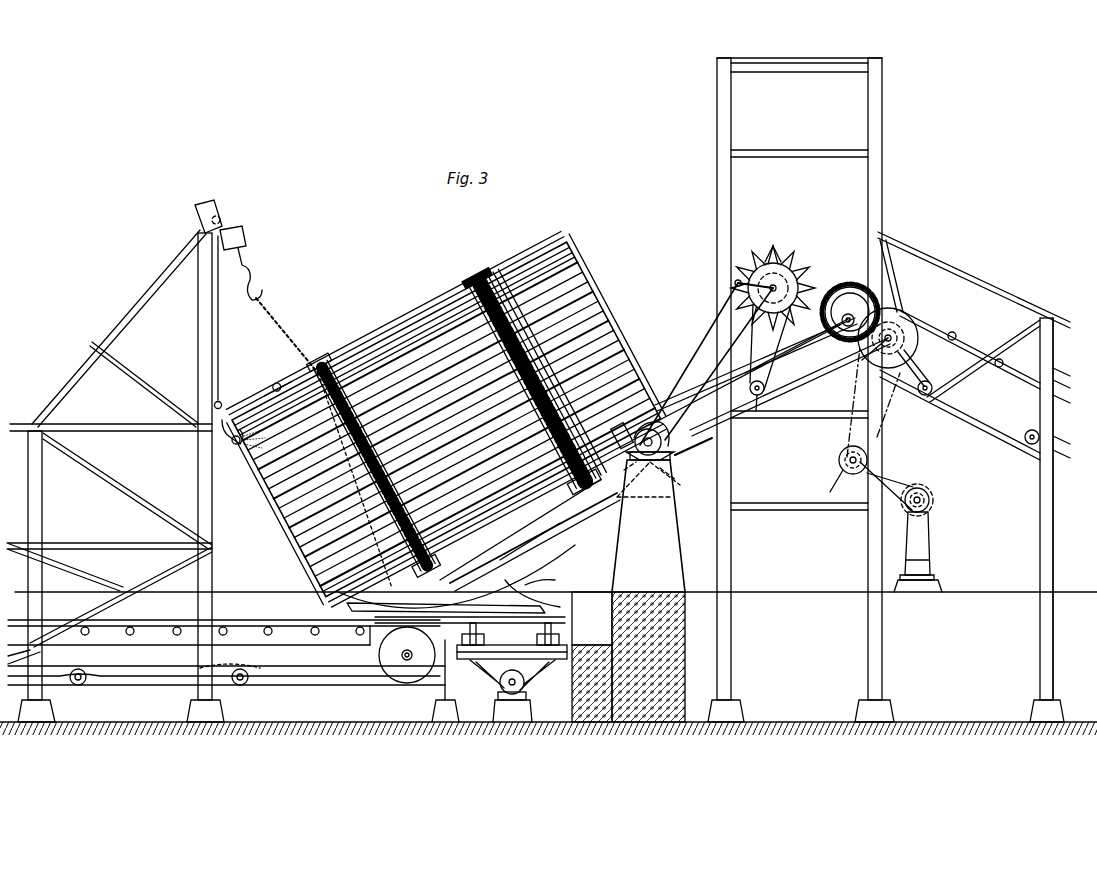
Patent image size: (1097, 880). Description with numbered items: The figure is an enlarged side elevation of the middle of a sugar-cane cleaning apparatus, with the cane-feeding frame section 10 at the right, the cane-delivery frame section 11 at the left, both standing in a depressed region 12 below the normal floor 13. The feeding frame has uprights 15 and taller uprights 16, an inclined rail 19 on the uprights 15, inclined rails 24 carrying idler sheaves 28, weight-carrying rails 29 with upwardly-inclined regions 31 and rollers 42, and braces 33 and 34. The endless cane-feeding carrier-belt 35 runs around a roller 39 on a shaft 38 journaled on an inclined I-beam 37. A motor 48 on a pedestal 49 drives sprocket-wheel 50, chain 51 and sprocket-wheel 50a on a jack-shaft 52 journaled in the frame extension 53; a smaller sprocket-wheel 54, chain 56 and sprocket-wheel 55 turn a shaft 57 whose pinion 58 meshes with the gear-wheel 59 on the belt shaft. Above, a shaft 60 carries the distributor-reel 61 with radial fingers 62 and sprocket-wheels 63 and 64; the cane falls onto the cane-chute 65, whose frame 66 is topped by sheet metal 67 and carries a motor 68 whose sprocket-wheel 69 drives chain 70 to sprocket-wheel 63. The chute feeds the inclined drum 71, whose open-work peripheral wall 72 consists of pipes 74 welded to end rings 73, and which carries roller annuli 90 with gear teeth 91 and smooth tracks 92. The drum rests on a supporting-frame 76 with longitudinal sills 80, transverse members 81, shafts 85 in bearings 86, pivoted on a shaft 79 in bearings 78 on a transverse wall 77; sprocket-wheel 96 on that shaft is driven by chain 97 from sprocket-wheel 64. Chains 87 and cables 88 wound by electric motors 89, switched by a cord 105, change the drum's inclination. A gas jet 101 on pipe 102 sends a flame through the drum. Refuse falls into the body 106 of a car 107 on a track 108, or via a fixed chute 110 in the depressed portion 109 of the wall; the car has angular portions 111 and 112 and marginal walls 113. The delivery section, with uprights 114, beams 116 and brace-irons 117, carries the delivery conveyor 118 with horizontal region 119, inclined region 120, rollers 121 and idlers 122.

The cane-feeding section of the frame-work 10 is at (1035, 481).
The cane-delivery frame section 11 is at (220, 513).
The depressed region 12 is at (145, 720).
The normal level or floor 13 is at (780, 592).
The uprights 15 is at (1040, 620).
The uprights 16 is at (731, 520).
The inclined rail 19 is at (965, 279).
The rails 24 is at (985, 431).
The idler rollers or sheaves 28 is at (930, 389).
The weight-carrying rails 29 is at (1004, 375).
The upwardly-inclined regions 31 is at (1052, 384).
The braces 33 is at (1016, 338).
The braces 34 is at (893, 273).
The endless cane-feeding carrier-belt 35 is at (1022, 369).
The I-beam 37 is at (795, 360).
The shaft 38 is at (848, 314).
The roller 39 is at (850, 291).
The rollers 42 is at (955, 334).
The engine or motor 48 is at (932, 502).
The pedestal 49 is at (926, 540).
The pulley or sprocket-wheel 50 is at (928, 497).
The pulley or sprocket-wheel 50a is at (842, 461).
The belt or sprocket-chain 51 is at (905, 480).
The jack-shaft 52 is at (840, 512).
The extension of the frame 53 is at (830, 513).
The pulley or sprocket-wheel 54 is at (843, 451).
The pulley or sprocket-wheel 55 is at (905, 333).
The belt or sprocket-chain 56 is at (885, 417).
The shaft 57 is at (880, 345).
The pinion 58 is at (905, 322).
The gear-wheel 59 is at (843, 283).
The shaft 60 is at (796, 262).
The distributor-reel 61 is at (735, 335).
The radially extending fingers or arms 62 is at (772, 248).
The pulley or sprocket-wheel 63 is at (742, 262).
The pulley or sprocket-wheel 64 is at (752, 289).
The cane-chute 65 is at (691, 378).
The frame 66 is at (800, 372).
The sheet metal 67 is at (748, 362).
The motor 68 is at (755, 398).
The pulley or sprocket-wheel 69 is at (765, 392).
The belt or sprocket-chain 70 is at (770, 360).
The drum 71 is at (426, 325).
The open-work peripheral wall 72 is at (521, 300).
The ring or annulus 73 is at (600, 316).
The pipes or tubes 74 is at (578, 296).
The supporting-frame 76 is at (528, 538).
The transversely-disposed wall 77 is at (676, 513).
The shaft bearings 78 is at (672, 478).
The shaft 79 is at (628, 613).
The longitudinal sills 80 is at (562, 522).
The transverse I-beams or members 81 is at (568, 501).
The longitudinally disposed shafts 85 is at (552, 528).
The bearings 86 is at (655, 461).
The chains 87 is at (297, 377).
The cables 88 is at (248, 265).
The electric motors 89 is at (246, 240).
The roller annuli 90 is at (333, 379).
The gear teeth 91 is at (480, 296).
The smooth roller-bearing surfaces 92 is at (482, 306).
The pulley or sprocket-wheel 96 is at (664, 436).
The belt or sprocket-chain 97 is at (712, 330).
The gas jet 101 is at (238, 455).
The combined gas and compressed-air pipe 102 is at (288, 406).
The cord 105 is at (220, 343).
The body of the car 106 is at (565, 565).
The car 107 is at (565, 620).
The transversely-disposed track 108 is at (552, 700).
The depressed intermediate portion 109 is at (680, 495).
The fixed inclined chute 110 is at (705, 455).
The angular portion 111 is at (488, 596).
The angular portion 112 is at (560, 565).
The upstanding confining or marginal walls 113 is at (555, 598).
The uprights 114 is at (200, 471).
The beams 116 is at (140, 676).
The brace-irons 117 is at (131, 488).
The endless delivery carrier-belt or conveyor 118 is at (252, 627).
The horizontal region 119 is at (303, 627).
The upwardly-inclined region 120 is at (28, 604).
The rollers 121 is at (133, 630).
The idlers 122 is at (74, 686).